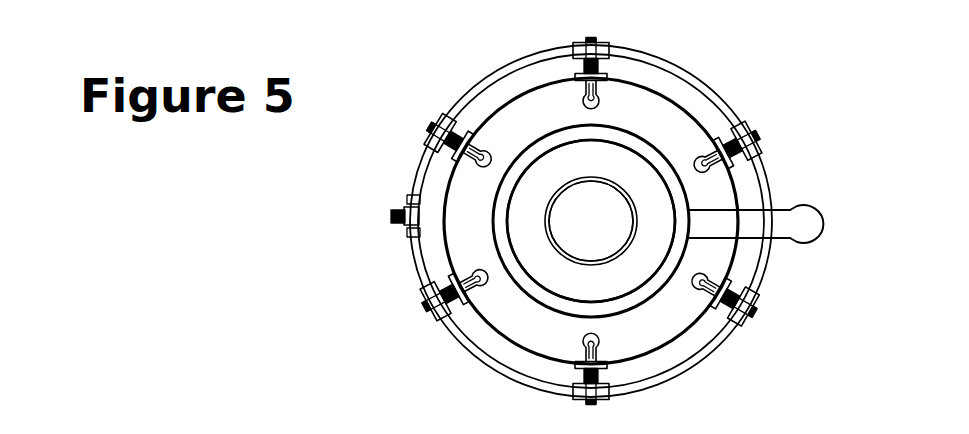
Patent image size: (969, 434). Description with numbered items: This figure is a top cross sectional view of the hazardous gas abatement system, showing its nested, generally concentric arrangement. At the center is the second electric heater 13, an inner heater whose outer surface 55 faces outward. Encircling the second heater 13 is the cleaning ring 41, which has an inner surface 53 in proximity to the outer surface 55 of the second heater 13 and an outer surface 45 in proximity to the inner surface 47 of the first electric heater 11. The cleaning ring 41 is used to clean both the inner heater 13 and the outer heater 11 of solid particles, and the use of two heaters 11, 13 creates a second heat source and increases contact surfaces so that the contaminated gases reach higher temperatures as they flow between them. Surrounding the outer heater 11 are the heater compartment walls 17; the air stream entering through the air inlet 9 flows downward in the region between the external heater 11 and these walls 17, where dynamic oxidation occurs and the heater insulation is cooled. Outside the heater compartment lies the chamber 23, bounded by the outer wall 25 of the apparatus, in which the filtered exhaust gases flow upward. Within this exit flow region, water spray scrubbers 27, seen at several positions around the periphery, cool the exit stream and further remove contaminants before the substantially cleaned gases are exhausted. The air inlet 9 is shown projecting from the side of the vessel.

The air inlet 9 is at (806, 244).
The electric heater 11 is at (562, 107).
The second electric heater 13 is at (570, 227).
The heater compartment walls 17 is at (638, 84).
The chamber 23 is at (661, 83).
The outer wall 25 is at (733, 120).
The water spray scrubbers 27 is at (700, 292).
The cleaning ring 41 is at (535, 188).
The outer surface of the cleaning ring 45 is at (531, 152).
The inner surface of the first heater 47 is at (540, 157).
The inner surface of the cleaning ring 53 is at (550, 208).
The outer surface of the second heater 55 is at (550, 223).